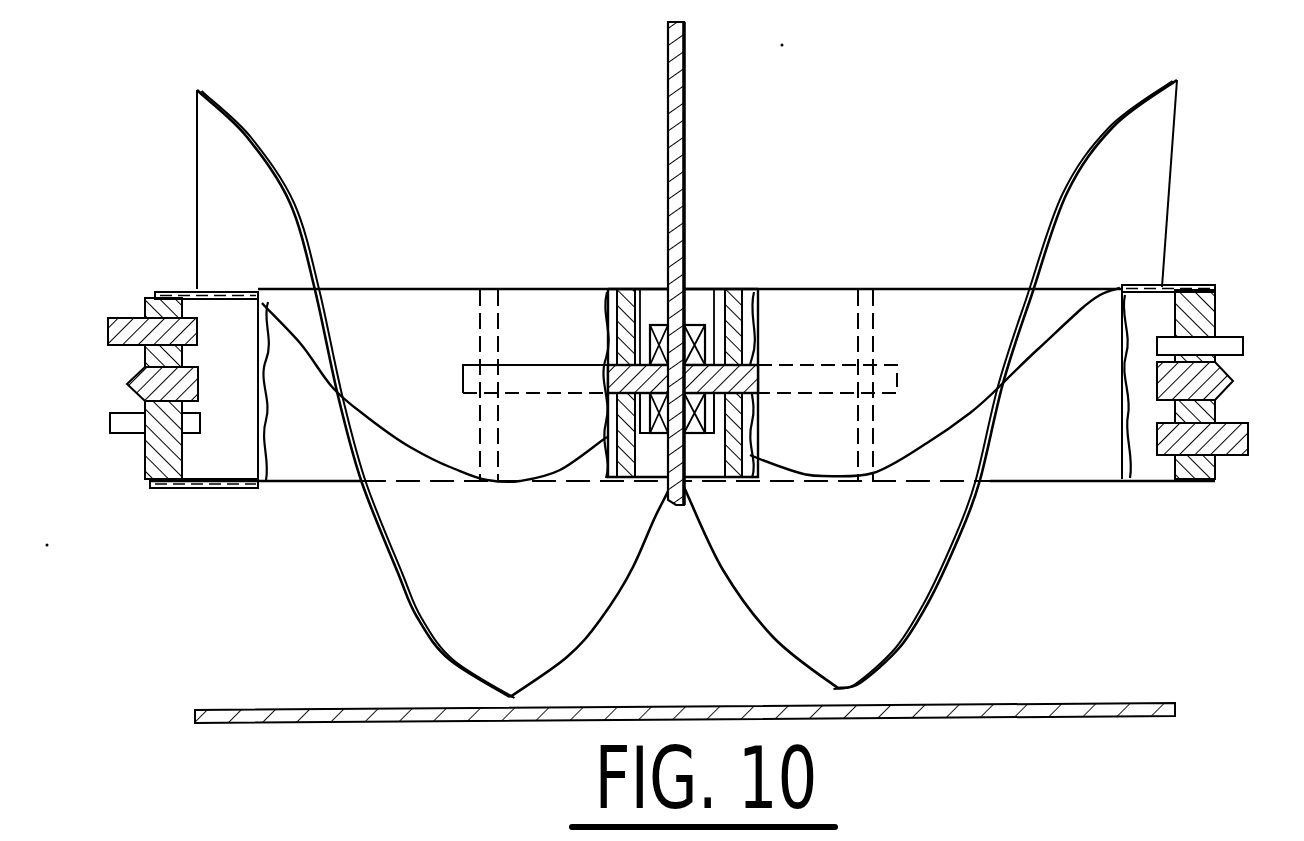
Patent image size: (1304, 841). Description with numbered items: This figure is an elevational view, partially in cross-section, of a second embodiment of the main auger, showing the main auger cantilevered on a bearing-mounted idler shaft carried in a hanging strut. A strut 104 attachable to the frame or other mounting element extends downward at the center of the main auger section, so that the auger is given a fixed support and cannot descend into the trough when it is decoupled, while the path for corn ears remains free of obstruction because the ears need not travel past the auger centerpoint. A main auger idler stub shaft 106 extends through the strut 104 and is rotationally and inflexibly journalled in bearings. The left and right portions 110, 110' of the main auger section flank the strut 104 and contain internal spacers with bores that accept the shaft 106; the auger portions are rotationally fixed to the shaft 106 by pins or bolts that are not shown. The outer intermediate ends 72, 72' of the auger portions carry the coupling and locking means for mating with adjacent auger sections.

The intermediate end 72 is at (155, 355).
The end bearing support assembly (opposite end) 72' is at (1199, 341).
The strut 104 is at (668, 82).
The main auger idler stub shaft 106 is at (807, 363).
The left portion of main auger section 110 is at (434, 394).
The right portion of main auger section 110' is at (930, 384).